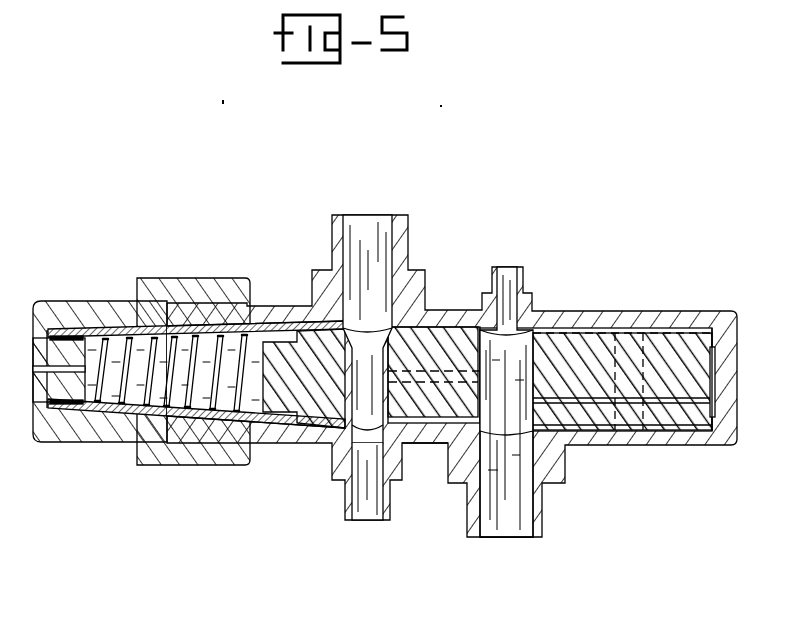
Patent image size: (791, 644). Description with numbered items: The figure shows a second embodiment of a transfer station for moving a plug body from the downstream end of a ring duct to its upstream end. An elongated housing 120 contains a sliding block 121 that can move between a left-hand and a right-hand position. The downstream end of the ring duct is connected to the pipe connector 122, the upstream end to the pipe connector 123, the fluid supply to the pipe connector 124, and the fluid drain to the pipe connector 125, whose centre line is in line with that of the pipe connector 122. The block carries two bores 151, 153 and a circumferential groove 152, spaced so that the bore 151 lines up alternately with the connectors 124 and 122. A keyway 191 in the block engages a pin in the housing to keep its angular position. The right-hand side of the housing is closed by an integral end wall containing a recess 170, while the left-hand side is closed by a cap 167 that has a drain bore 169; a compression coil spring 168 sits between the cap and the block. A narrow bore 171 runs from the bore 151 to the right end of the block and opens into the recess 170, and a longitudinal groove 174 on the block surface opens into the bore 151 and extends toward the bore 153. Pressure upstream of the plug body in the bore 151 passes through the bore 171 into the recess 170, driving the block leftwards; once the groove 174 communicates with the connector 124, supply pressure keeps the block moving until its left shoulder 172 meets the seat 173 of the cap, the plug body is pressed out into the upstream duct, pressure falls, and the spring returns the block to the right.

The housing 120 is at (652, 318).
The sliding block 121 is at (573, 360).
The pipe connector 122 is at (540, 518).
The pipe connector 123 is at (400, 236).
The pipe connector 124 is at (345, 497).
The pipe connector 125 is at (522, 283).
The bore 151 is at (600, 402).
The circumferential groove 152 is at (632, 422).
The bore 153 is at (343, 410).
The cap 167 is at (67, 312).
The compression coil spring 168 is at (190, 330).
The drain bore 169 is at (38, 375).
The recess 170 is at (717, 350).
The narrow bore 171 is at (703, 405).
The left shoulder 172 is at (300, 324).
The seat 173 is at (147, 409).
The longitudinal groove 174 is at (440, 422).
The keyway 191 is at (453, 313).